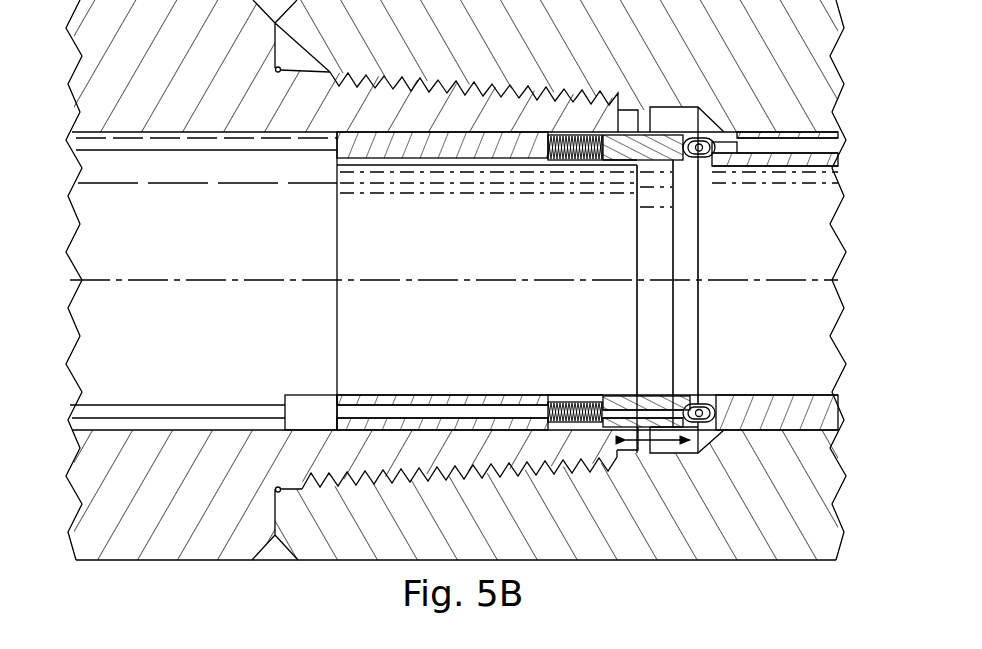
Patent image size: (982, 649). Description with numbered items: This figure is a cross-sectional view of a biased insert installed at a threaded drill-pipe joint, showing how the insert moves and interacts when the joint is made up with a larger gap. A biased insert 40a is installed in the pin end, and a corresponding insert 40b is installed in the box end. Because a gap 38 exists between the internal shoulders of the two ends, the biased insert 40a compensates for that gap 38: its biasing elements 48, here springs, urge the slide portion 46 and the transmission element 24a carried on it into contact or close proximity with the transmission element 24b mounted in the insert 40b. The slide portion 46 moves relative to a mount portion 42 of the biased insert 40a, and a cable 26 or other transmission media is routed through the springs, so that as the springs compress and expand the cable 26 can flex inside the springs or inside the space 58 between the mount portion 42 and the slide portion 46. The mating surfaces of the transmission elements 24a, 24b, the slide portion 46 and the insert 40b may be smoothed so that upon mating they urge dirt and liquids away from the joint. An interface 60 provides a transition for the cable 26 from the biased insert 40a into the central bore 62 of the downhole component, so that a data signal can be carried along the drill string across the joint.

The transmission element 24a is at (697, 136).
The transmission element 24b is at (703, 160).
The cable 26 is at (652, 397).
The gap 38 is at (665, 455).
The biased insert 40a is at (452, 116).
The insert 40b is at (784, 118).
The mount portion 42 is at (437, 147).
The slide portion 46 is at (628, 166).
The biasing element 48 is at (573, 160).
The space 58 is at (587, 394).
The interface 60 is at (312, 404).
The central bore 62 is at (108, 330).